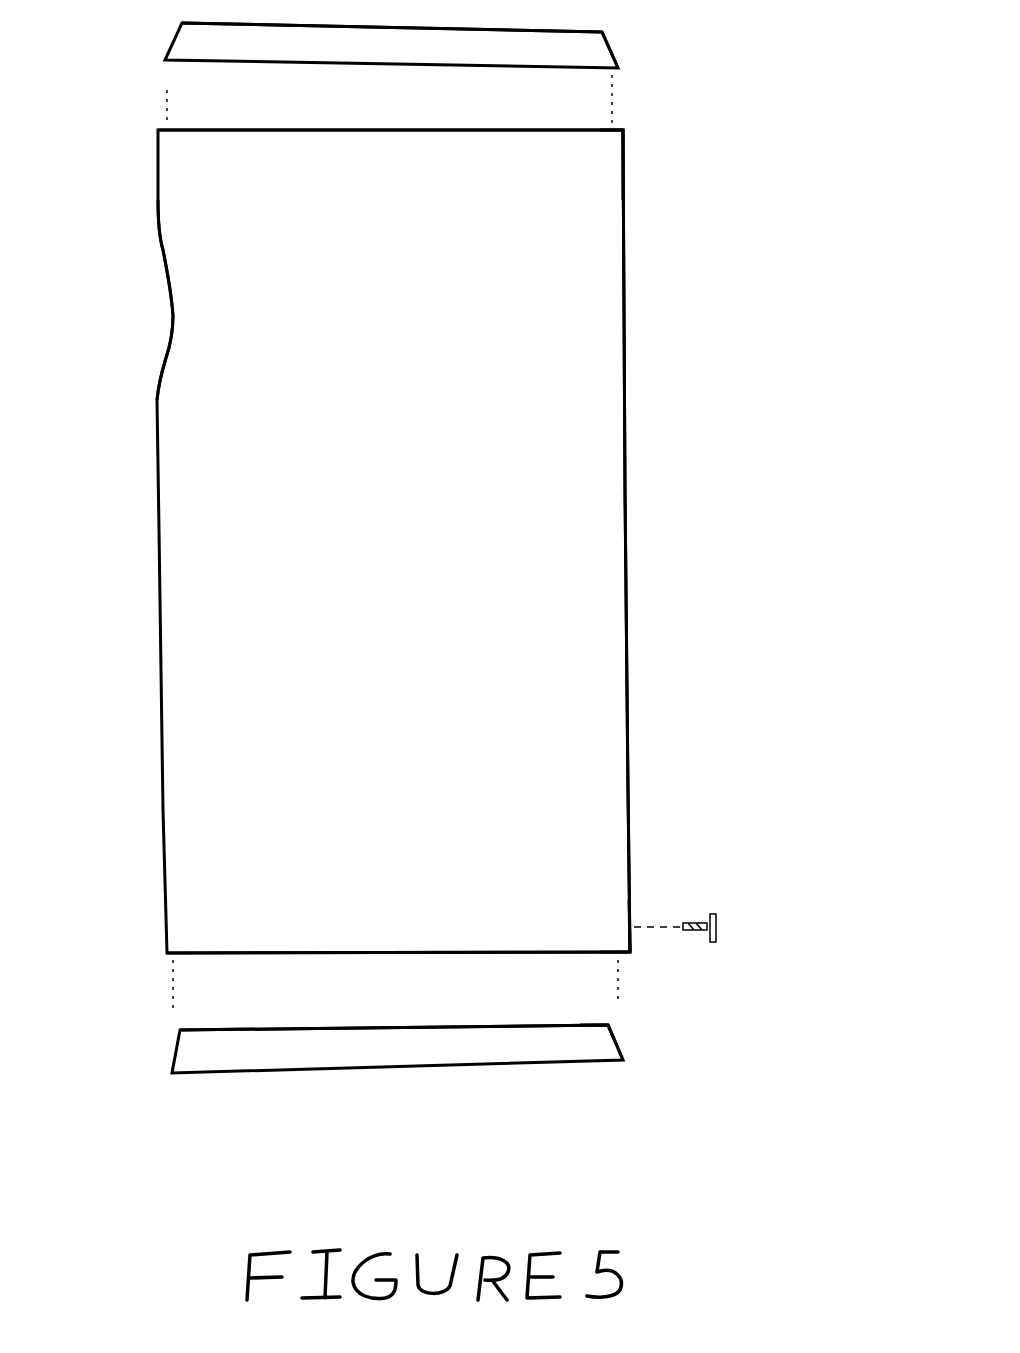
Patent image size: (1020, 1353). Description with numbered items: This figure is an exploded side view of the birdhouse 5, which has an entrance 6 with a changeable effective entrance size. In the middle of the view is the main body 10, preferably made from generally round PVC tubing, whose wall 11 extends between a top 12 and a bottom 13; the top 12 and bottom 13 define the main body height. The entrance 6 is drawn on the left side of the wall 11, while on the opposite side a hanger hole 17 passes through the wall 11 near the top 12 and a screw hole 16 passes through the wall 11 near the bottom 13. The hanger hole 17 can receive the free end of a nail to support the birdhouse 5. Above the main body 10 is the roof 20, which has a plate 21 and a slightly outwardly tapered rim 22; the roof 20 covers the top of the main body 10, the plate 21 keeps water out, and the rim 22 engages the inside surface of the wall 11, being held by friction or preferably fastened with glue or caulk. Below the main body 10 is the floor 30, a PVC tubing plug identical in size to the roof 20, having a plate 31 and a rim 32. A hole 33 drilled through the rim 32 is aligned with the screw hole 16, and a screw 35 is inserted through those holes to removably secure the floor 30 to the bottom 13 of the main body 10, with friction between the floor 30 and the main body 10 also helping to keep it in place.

The birdhouse 5 is at (687, 457).
The entrance 6 is at (172, 330).
The main body 10 is at (627, 595).
The wall 11 is at (628, 748).
The top 12 is at (367, 128).
The bottom 13 is at (292, 955).
The screw hole 16 is at (631, 927).
The hanger hole 17 is at (623, 185).
The roof 20 is at (172, 40).
The plate 21 is at (618, 57).
The rim 22 is at (258, 25).
The floor 30 is at (177, 1045).
The plate 31 is at (623, 1052).
The rim 32 is at (418, 1025).
The hole 33 is at (612, 1030).
The screw 35 is at (716, 922).